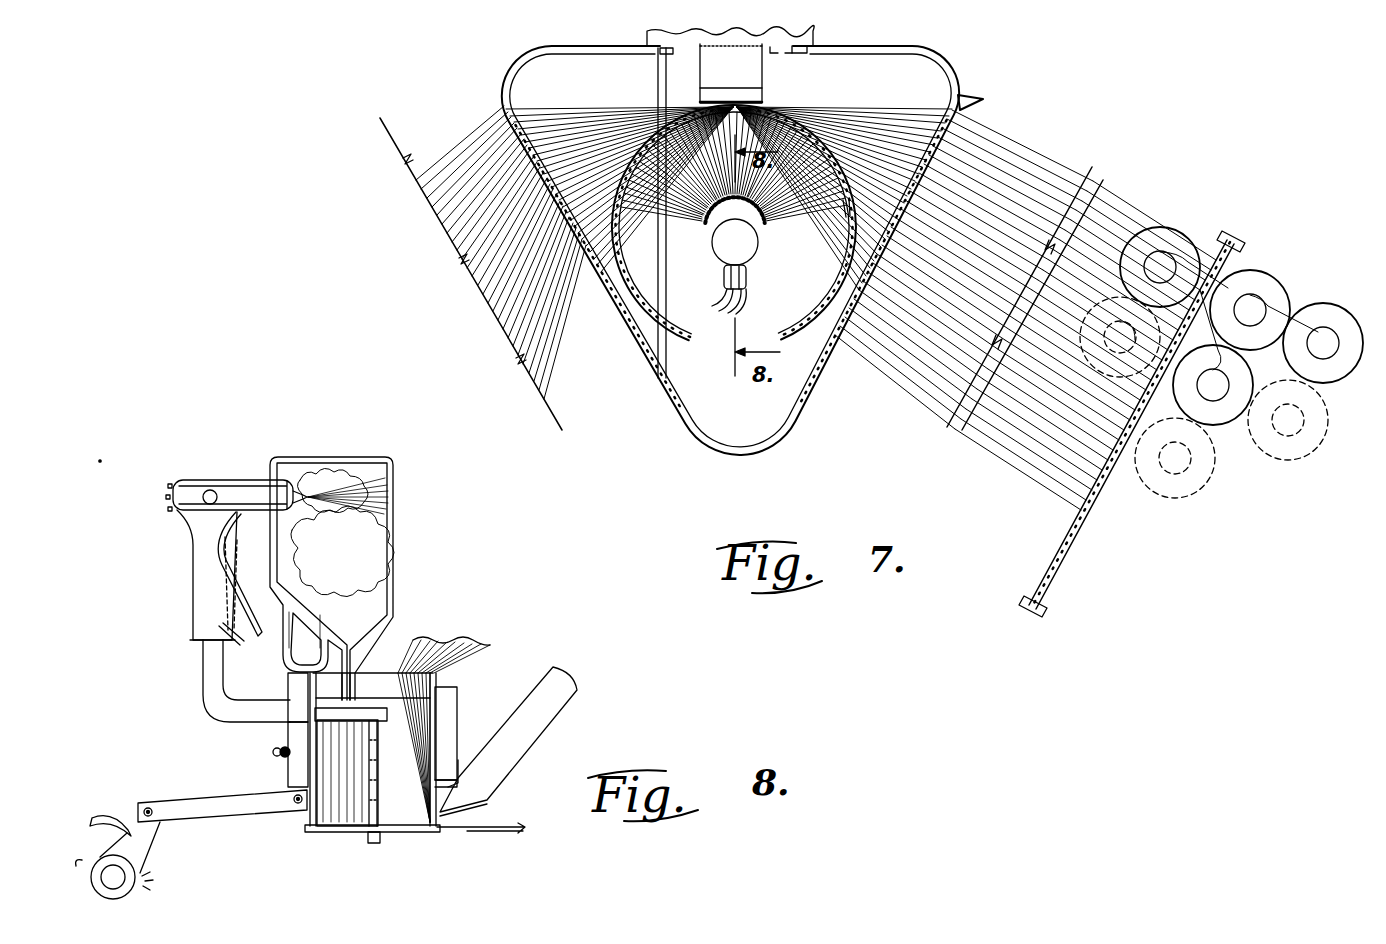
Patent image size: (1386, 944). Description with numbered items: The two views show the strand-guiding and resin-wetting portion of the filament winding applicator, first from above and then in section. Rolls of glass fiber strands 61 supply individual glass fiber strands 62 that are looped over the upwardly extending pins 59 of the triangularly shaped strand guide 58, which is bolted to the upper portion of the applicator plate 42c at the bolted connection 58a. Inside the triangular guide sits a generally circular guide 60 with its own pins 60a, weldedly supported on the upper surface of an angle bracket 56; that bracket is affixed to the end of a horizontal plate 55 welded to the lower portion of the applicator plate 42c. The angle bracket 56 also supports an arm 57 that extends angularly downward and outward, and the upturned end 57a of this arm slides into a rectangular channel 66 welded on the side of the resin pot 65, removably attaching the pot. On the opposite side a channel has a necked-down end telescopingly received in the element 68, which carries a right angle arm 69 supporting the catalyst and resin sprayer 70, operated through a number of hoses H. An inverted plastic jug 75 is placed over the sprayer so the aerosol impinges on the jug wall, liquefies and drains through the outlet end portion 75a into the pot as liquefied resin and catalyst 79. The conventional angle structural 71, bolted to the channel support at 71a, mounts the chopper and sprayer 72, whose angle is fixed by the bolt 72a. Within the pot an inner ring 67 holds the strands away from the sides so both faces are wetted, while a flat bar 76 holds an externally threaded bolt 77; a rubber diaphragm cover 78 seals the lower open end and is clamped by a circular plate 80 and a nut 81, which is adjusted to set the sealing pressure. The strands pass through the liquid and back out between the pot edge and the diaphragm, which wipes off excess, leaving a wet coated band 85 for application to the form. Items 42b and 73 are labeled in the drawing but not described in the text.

In FIG. 7, the strand guide 58 is at (960, 82).
In FIG. 7, the bolted connection of strand guide 58a is at (663, 54).
In FIG. 7, the applicator plate 42c is at (687, 47).
In FIG. 7, the bracket 42b is at (772, 48).
In FIG. 7, the horizontal plate 55 is at (707, 82).
In FIG. 7, the angle bracket 56 is at (758, 102).
In FIG. 7, the upwardly extending pins 59 is at (986, 97).
In FIG. 7, the circular guide 60 is at (786, 336).
In FIG. 7, the pins 60a is at (846, 210).
In FIG. 7, the resin pot 65 is at (758, 240).
In FIG. 7, the inverted plastic jug 75 is at (718, 250).
In FIG. 8, the inverted plastic jug 75 is at (345, 457).
In FIG. 7, the hoses H is at (712, 315).
In FIG. 7, the glass fiber strands 62 is at (1135, 210).
In FIG. 7, the rolls of glass fiber strands 61 is at (1323, 330).
In FIG. 8, the catalyst and resin sprayer 70 is at (205, 481).
In FIG. 8, the outlet end portion of jug 75a is at (288, 686).
In FIG. 8, the right angle arm 69 is at (203, 685).
In FIG. 8, the telescoping element 68 is at (288, 694).
In FIG. 8, the rubber diaphragm cover 78 is at (436, 832).
In FIG. 8, the liquefied resin and catalyst 79 is at (330, 830).
In FIG. 8, the flat bar 76 is at (380, 722).
In FIG. 8, the externally threaded bolt 77 is at (378, 810).
In FIG. 8, the circular plate 80 is at (398, 833).
In FIG. 8, the nut 81 is at (366, 843).
In FIG. 8, the inner ring 67 is at (398, 673).
In FIG. 8, the rectangular channel 66 is at (450, 690).
In FIG. 8, the arm 57 is at (556, 712).
In FIG. 8, the upturned end of arm 57a is at (452, 777).
In FIG. 8, the band 85 is at (466, 834).
In FIG. 8, the angle structural 71 is at (225, 802).
In FIG. 8, the bolted connection of angle structural 71a is at (295, 804).
In FIG. 8, the bolt 72a is at (148, 808).
In FIG. 8, the chopper and sprayer 72 is at (136, 896).
In FIG. 8, the guard 73 is at (114, 818).